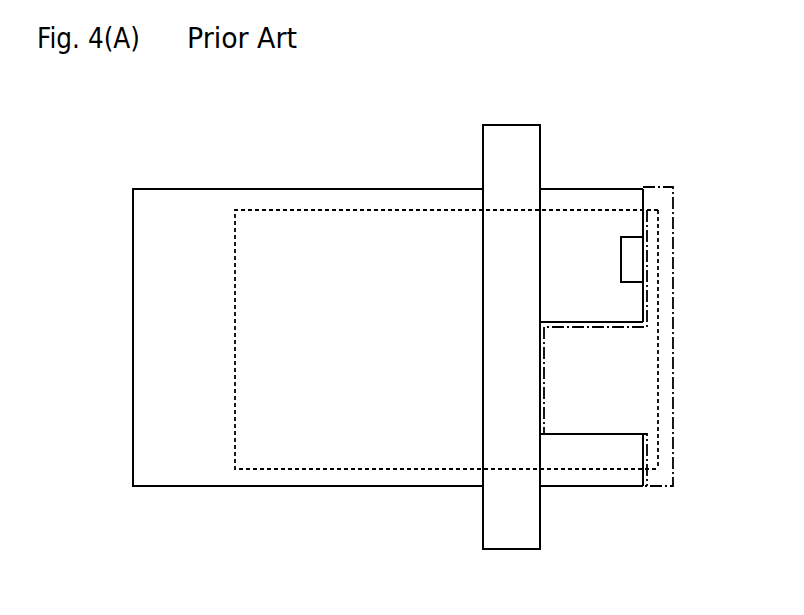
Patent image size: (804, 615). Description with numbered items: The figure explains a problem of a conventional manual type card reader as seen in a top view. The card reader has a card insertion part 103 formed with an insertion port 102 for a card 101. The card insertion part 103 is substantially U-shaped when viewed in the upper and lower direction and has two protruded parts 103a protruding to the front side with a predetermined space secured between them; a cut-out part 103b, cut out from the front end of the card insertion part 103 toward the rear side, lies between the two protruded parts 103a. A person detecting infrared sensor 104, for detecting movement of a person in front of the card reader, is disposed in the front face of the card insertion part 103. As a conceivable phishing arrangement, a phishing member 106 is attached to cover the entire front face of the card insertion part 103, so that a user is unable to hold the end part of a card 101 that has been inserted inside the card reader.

The card 101 is at (371, 210).
The insertion port 102 is at (662, 303).
The card insertion part 103 is at (588, 188).
The protruded part 103a is at (645, 200).
The cut-out part 103b is at (622, 437).
The person detecting infrared sensor 104 is at (621, 262).
The phishing member 106 is at (673, 378).